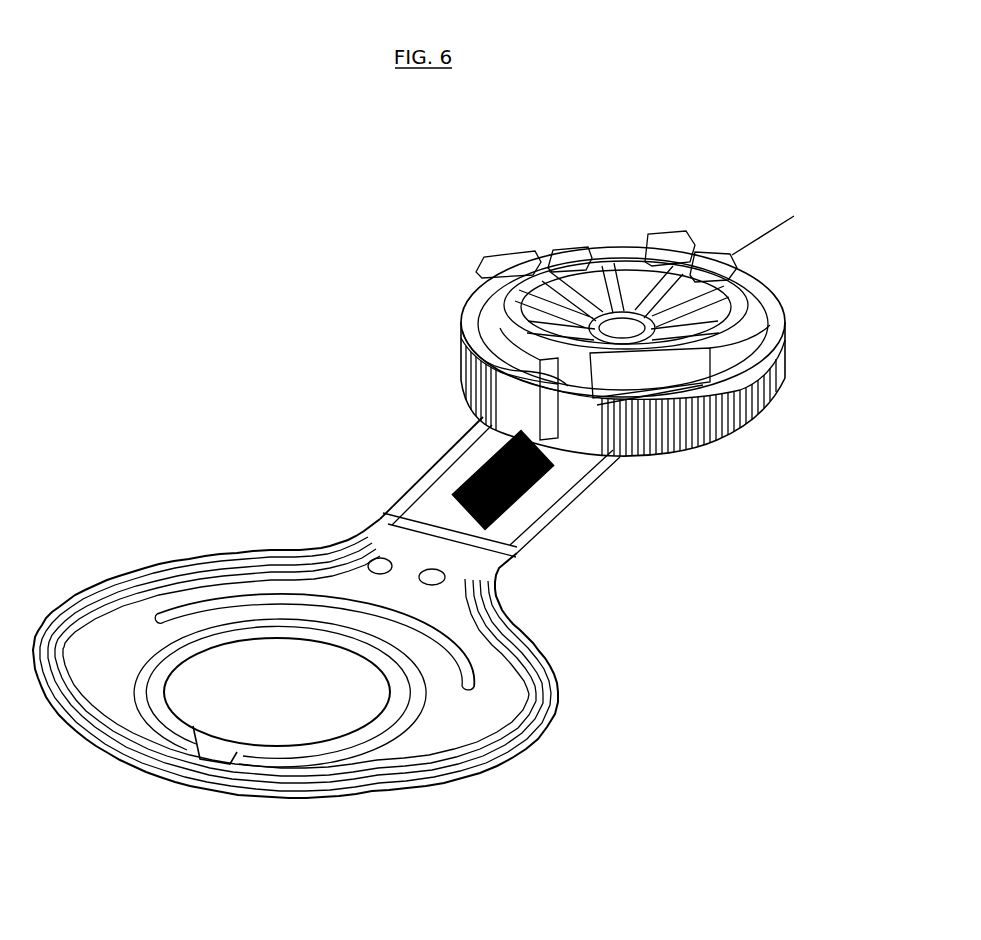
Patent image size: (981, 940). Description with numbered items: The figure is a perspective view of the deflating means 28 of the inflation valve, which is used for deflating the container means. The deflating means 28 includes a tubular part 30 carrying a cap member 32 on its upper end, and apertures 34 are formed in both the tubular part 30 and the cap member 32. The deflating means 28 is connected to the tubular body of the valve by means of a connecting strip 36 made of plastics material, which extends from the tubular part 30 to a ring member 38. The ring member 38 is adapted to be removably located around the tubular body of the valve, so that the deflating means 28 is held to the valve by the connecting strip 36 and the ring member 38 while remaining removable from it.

The deflating means 28 is at (92, 78).
The tubular part 30 is at (673, 450).
The cap member 32 is at (601, 256).
The aperture 34 is at (498, 315).
The connecting strip 36 is at (442, 508).
The ring member 38 is at (128, 625).